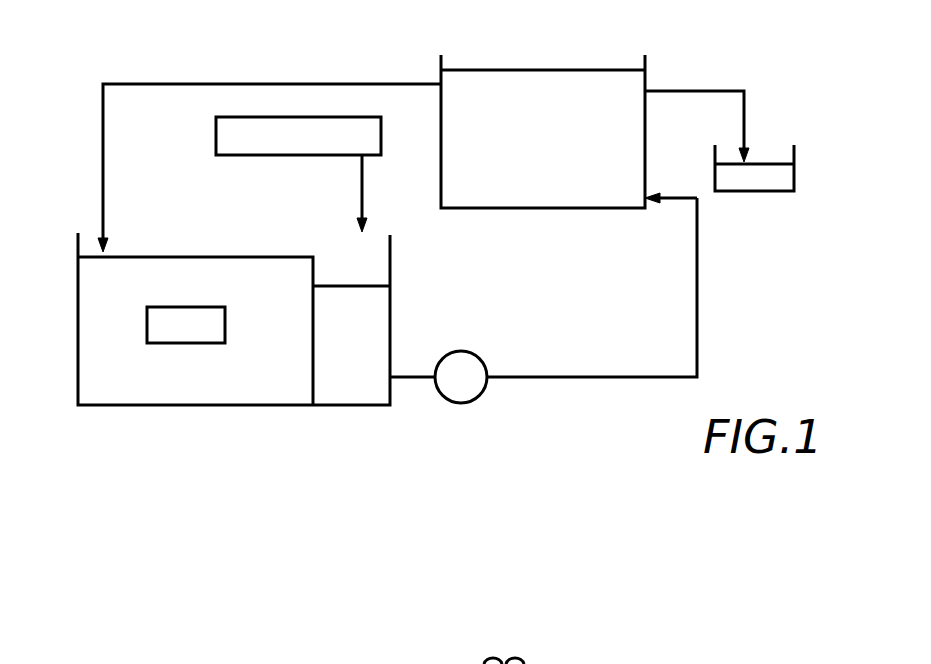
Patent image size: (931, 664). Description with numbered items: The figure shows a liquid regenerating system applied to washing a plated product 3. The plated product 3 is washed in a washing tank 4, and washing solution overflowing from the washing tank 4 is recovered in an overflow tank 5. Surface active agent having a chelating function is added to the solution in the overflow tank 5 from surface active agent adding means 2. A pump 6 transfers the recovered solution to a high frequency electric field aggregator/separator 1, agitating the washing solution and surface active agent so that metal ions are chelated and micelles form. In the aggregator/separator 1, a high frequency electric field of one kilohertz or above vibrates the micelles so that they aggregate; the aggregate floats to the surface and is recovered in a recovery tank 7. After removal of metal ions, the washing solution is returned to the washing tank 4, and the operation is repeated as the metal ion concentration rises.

The high frequency electric field aggregator/separator 1 is at (545, 103).
The surface active agent adding means 2 is at (283, 135).
The plated product 3 is at (158, 327).
The washing tank 4 is at (78, 385).
The overflow tank 5 is at (393, 331).
The pump 6 is at (485, 363).
The recovery tank 7 is at (753, 184).